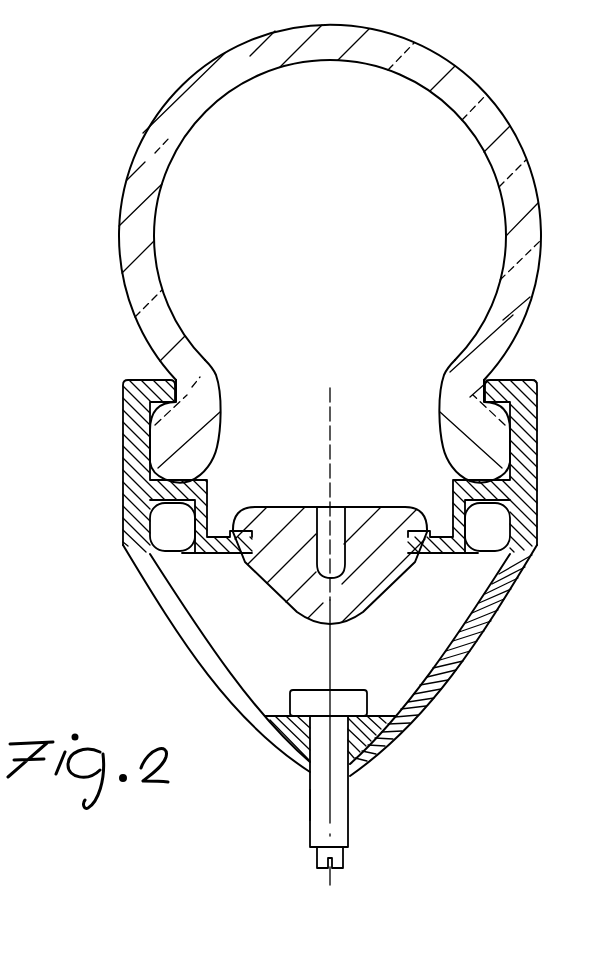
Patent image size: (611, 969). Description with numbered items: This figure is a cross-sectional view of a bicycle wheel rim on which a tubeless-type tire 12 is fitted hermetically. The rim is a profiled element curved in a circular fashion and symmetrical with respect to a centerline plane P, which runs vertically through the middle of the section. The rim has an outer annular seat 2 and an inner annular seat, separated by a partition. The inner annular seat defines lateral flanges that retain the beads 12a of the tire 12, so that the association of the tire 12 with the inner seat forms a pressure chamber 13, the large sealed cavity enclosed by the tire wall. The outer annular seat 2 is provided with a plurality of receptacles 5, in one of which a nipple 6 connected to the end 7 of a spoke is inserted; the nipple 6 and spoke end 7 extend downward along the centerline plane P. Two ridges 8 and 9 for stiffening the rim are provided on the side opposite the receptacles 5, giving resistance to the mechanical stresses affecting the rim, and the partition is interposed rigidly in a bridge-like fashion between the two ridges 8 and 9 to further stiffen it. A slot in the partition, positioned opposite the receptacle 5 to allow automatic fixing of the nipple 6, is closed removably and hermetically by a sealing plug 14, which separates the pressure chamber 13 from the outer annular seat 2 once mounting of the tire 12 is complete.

The tire 12 is at (514, 125).
The pressure chamber 13 is at (346, 250).
The beads 12a is at (460, 463).
The outer annular seat 2 is at (417, 651).
The ridge 9 is at (167, 532).
The ridge 8 is at (492, 535).
The sealing plug 14 is at (272, 614).
The receptacle 5 is at (342, 742).
The nipple 6 is at (318, 803).
The end of spoke 7 is at (317, 860).
The centerline plane P is at (327, 790).